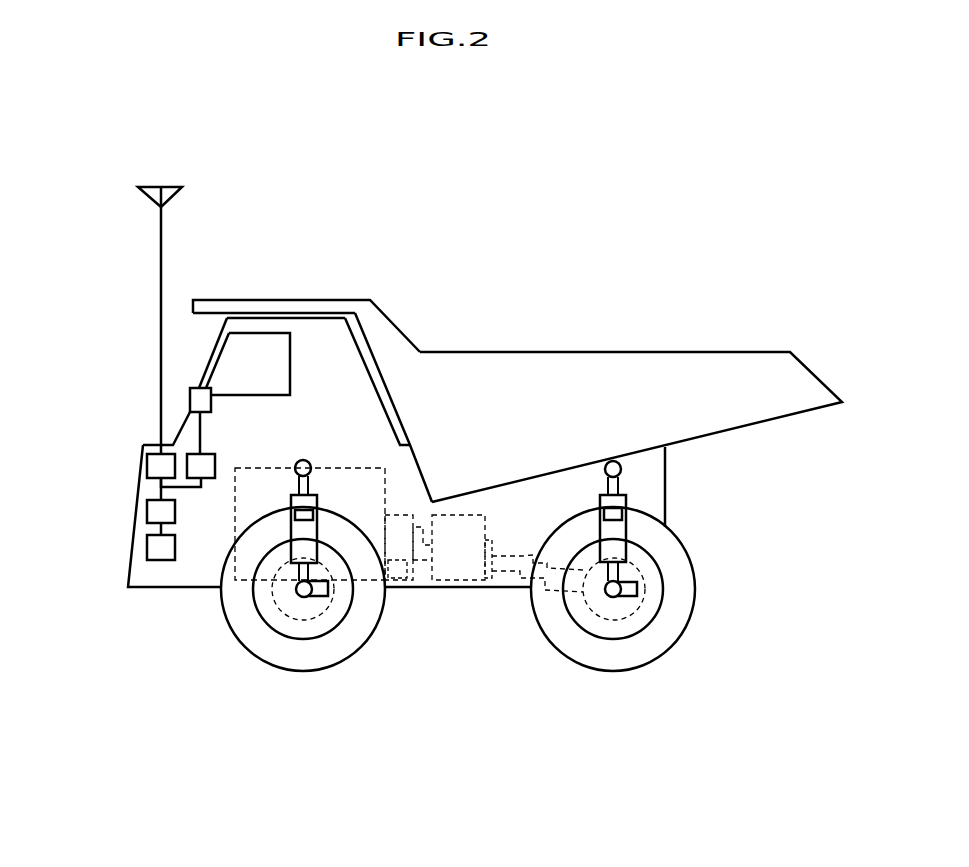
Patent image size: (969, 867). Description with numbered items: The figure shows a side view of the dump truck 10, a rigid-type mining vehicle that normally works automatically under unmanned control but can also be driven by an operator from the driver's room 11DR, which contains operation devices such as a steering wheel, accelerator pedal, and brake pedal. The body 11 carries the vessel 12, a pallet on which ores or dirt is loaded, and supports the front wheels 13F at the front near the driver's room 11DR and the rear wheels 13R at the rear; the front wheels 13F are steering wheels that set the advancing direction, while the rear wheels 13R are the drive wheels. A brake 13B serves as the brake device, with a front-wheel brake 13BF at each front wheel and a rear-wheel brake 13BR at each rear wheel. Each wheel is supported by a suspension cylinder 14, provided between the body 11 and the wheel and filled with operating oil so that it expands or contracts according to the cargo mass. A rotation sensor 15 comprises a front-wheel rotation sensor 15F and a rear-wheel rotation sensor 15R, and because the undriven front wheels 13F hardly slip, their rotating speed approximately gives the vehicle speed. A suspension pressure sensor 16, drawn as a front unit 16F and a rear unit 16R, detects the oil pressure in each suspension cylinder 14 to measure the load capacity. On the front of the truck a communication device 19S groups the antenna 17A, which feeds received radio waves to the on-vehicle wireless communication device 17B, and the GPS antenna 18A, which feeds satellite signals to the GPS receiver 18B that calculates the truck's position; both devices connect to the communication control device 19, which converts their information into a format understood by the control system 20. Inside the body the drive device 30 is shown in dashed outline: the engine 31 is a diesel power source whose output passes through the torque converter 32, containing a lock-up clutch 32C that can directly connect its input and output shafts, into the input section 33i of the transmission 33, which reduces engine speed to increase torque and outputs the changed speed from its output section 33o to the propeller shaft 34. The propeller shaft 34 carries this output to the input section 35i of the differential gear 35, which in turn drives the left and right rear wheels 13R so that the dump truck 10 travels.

The dump truck 10 is at (662, 147).
The body 11 is at (667, 457).
The driver's room 11DR is at (245, 352).
The vessel 12 is at (798, 385).
The front wheels 13F is at (255, 655).
The rear wheels 13R is at (672, 647).
The brake 13B is at (457, 656).
The front-wheel brake 13BF is at (300, 610).
The rear-wheel brake 13BR is at (607, 603).
The suspension cylinder 14 is at (317, 528).
The rotation sensor 15 is at (557, 646).
The front-wheel rotation sensor 15F is at (329, 589).
The rear-wheel rotation sensor 15R is at (638, 589).
The suspension pressure sensor 16 is at (535, 412).
The front suspension pressure sensor 16F is at (298, 463).
The rear suspension pressure sensor 16R is at (627, 517).
The antenna 17A is at (168, 185).
The on-vehicle wireless communication device 17B is at (145, 467).
The GPS antenna 18A is at (190, 388).
The GPS receiver 18B is at (210, 480).
The communication control device 19 is at (145, 510).
The communication device 19S is at (100, 383).
The control system 20 is at (145, 547).
The drive device 30 is at (657, 243).
The engine 31 is at (386, 515).
The torque converter 32 is at (400, 533).
The lock-up clutch 32C is at (395, 580).
The transmission 33 is at (470, 533).
The input section 33i is at (432, 580).
The output section 33o is at (485, 580).
The propeller shaft 34 is at (507, 557).
The differential gear 35 is at (583, 560).
The input section 35i is at (508, 560).